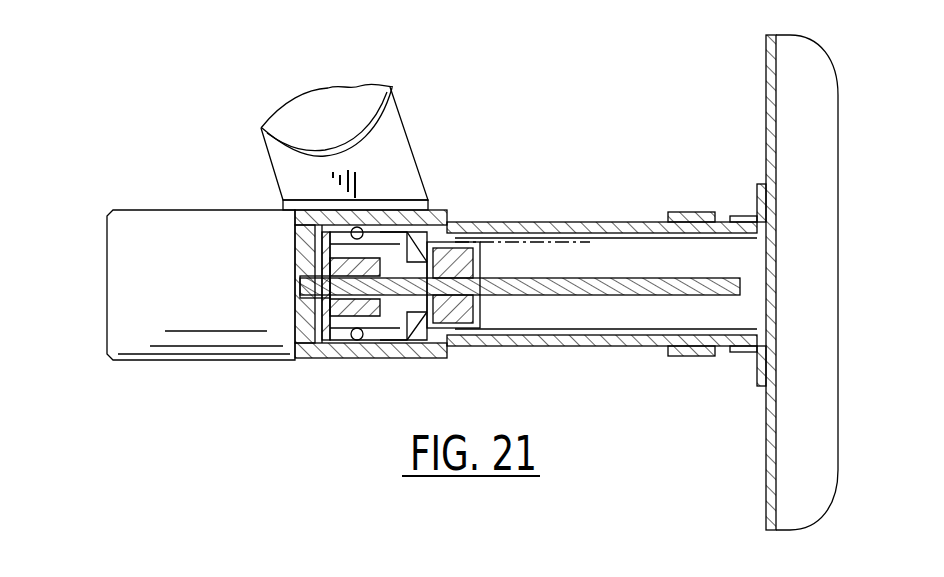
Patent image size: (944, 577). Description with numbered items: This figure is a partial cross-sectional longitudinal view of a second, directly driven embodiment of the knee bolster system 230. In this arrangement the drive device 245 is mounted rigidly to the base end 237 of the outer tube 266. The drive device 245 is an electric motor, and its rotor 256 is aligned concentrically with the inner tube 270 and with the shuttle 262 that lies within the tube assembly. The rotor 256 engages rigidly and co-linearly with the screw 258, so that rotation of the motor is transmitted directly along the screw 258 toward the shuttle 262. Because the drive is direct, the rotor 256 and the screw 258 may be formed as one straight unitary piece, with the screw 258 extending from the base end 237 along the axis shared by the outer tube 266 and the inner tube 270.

The adjustment assembly 230 is at (91, 155).
The drive device 245 is at (127, 228).
The base end 237 is at (327, 350).
The rotor 256 is at (308, 271).
The screw 258 is at (550, 268).
The shuttle 262 is at (470, 303).
The outer tube 266 is at (497, 218).
The inner tube 270 is at (523, 352).